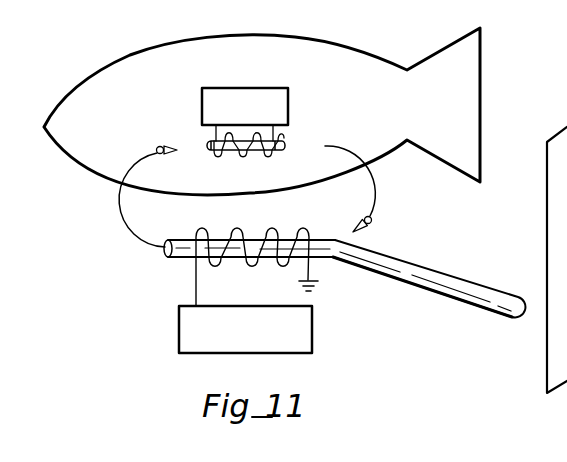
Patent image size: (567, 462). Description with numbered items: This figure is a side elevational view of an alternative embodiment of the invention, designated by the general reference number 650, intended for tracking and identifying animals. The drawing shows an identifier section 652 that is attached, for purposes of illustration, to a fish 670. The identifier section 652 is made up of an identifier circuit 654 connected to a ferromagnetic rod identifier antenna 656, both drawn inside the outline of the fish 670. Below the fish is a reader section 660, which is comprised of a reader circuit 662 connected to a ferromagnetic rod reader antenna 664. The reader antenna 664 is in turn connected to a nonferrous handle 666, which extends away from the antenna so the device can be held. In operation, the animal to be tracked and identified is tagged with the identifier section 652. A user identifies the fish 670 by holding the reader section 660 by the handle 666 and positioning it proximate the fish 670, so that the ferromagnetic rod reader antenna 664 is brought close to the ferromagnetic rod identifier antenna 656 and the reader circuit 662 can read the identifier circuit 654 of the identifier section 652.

The alternative embodiment for tracking and identifying animals 650 is at (298, 273).
The identifier section 652 is at (220, 122).
The identifier circuit 654 is at (264, 115).
The ferromagnetic rod identifier antenna 656 is at (283, 143).
The reader section 660 is at (429, 265).
The reader circuit 662 is at (315, 335).
The ferromagnetic rod reader antenna 664 is at (321, 236).
The nonferrous handle 666 is at (480, 288).
The fish 670 is at (313, 37).